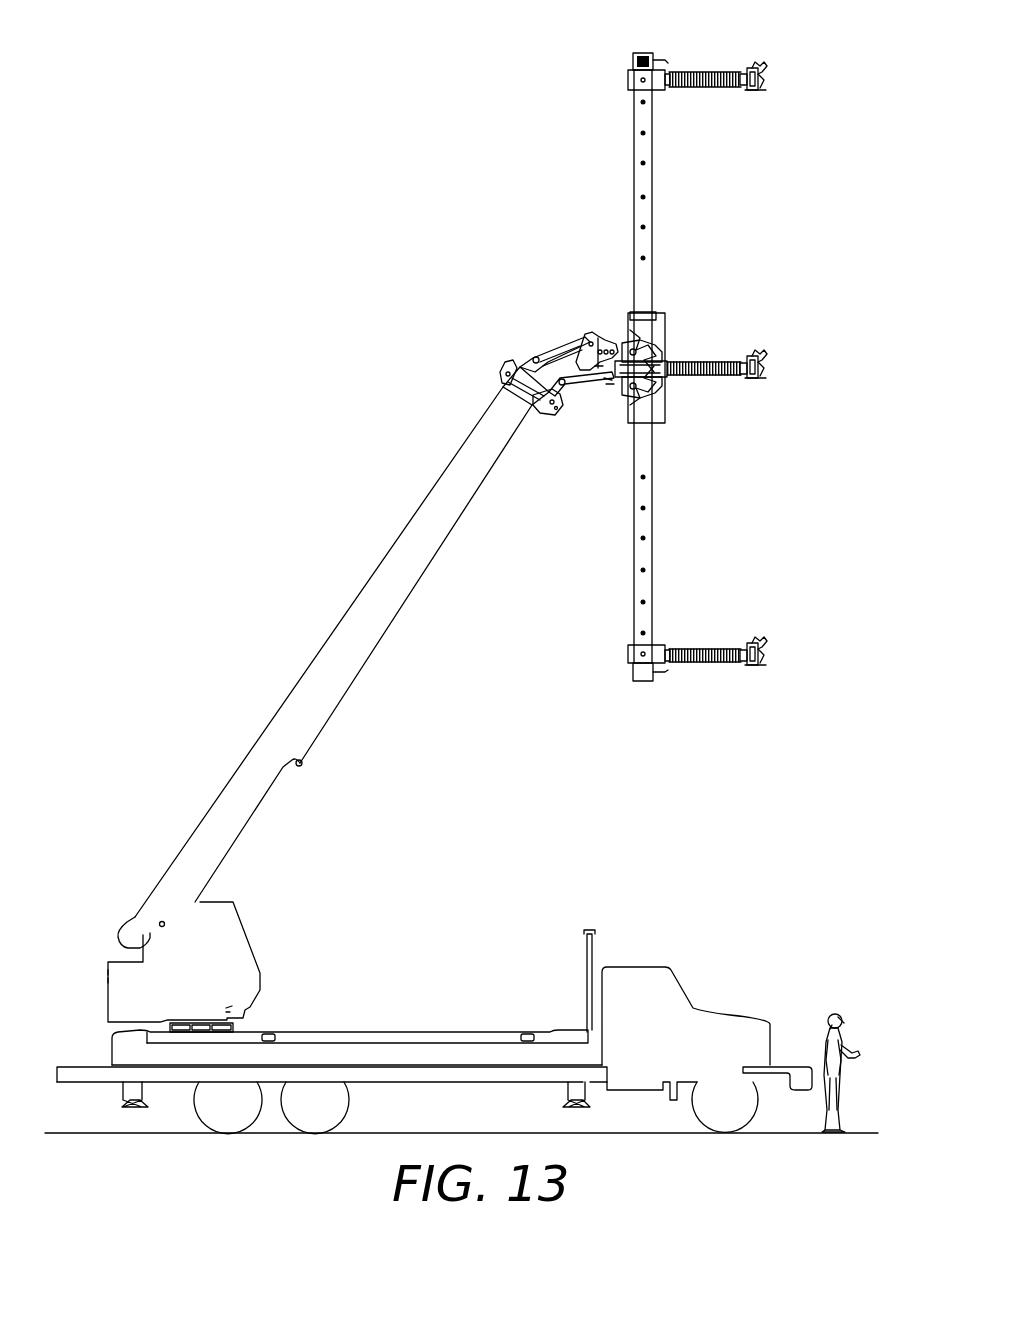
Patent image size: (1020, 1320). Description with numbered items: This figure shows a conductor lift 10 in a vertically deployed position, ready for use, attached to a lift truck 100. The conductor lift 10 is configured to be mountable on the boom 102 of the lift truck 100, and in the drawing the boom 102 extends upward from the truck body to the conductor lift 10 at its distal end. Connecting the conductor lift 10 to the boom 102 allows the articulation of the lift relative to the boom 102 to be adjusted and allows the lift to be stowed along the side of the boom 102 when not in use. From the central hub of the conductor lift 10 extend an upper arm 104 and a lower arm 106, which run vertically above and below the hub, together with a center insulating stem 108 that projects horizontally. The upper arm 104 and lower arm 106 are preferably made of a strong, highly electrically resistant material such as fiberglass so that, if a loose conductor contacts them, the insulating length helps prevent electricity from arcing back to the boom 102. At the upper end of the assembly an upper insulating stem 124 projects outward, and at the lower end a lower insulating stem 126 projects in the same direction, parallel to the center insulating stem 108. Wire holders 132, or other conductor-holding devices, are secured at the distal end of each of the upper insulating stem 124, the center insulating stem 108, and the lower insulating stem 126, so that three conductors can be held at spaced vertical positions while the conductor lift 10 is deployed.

The conductor lift 10 is at (493, 184).
The lift truck 100 is at (648, 978).
The boom 102 is at (422, 520).
The upper arm 104 is at (637, 172).
The lower arm 106 is at (640, 556).
The center insulating stem 108 is at (707, 375).
The upper insulating stem 124 is at (700, 72).
The lower insulating stem 126 is at (707, 662).
The wire holders 132 is at (755, 65).